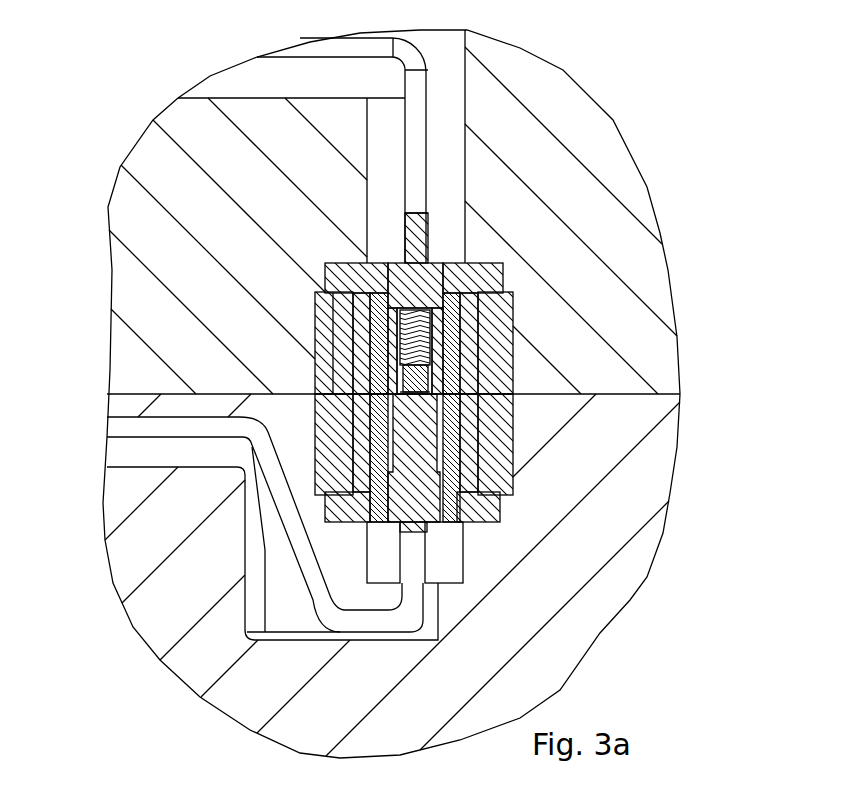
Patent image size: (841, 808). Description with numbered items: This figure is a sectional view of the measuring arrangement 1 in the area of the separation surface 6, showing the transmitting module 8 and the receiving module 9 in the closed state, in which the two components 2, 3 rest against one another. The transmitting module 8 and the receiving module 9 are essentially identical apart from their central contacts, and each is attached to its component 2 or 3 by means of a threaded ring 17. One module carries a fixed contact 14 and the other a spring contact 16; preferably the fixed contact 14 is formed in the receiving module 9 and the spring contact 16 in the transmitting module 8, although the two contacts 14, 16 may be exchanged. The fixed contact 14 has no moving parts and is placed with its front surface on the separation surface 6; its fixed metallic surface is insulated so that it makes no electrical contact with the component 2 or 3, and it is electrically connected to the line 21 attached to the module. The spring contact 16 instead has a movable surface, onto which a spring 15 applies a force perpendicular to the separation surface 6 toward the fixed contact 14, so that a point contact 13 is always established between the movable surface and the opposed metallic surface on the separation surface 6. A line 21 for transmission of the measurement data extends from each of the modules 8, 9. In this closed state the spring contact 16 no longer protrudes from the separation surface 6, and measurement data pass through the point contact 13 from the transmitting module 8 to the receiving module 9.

The temperature sensor assembly 1 is at (383, 353).
The component 2 is at (200, 673).
The component 3 is at (655, 283).
The separation surface 6 is at (171, 398).
The transmitting module 8 is at (299, 314).
The receiving module 9 is at (297, 466).
The point contact 13 is at (403, 396).
The fixed contact 14 is at (405, 398).
The spring 15 is at (413, 353).
The spring contact 16 is at (405, 386).
The threaded ring 17 is at (498, 312).
The line 21 is at (415, 170).